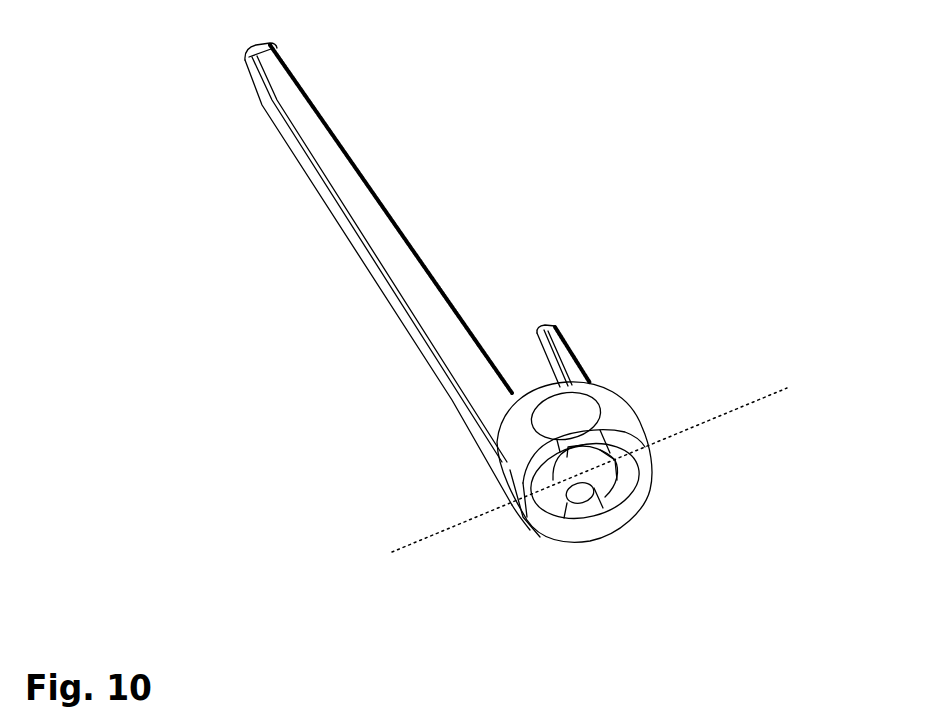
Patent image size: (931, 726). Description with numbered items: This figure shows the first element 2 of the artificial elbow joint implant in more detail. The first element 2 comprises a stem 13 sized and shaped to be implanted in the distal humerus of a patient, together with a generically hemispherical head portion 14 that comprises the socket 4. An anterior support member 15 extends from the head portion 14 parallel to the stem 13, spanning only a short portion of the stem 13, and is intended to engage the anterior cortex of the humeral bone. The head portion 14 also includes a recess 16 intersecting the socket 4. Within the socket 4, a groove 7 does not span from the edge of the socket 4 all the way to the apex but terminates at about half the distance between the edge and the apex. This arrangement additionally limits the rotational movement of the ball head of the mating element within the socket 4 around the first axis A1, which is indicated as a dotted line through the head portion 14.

The first element 2 is at (338, 381).
The socket 4 is at (615, 492).
The groove 7 is at (590, 513).
The stem 13 is at (332, 223).
The head portion 14 is at (513, 458).
The anterior support member 15 is at (552, 327).
The recess 16 is at (635, 467).
The first axis A1 is at (740, 407).